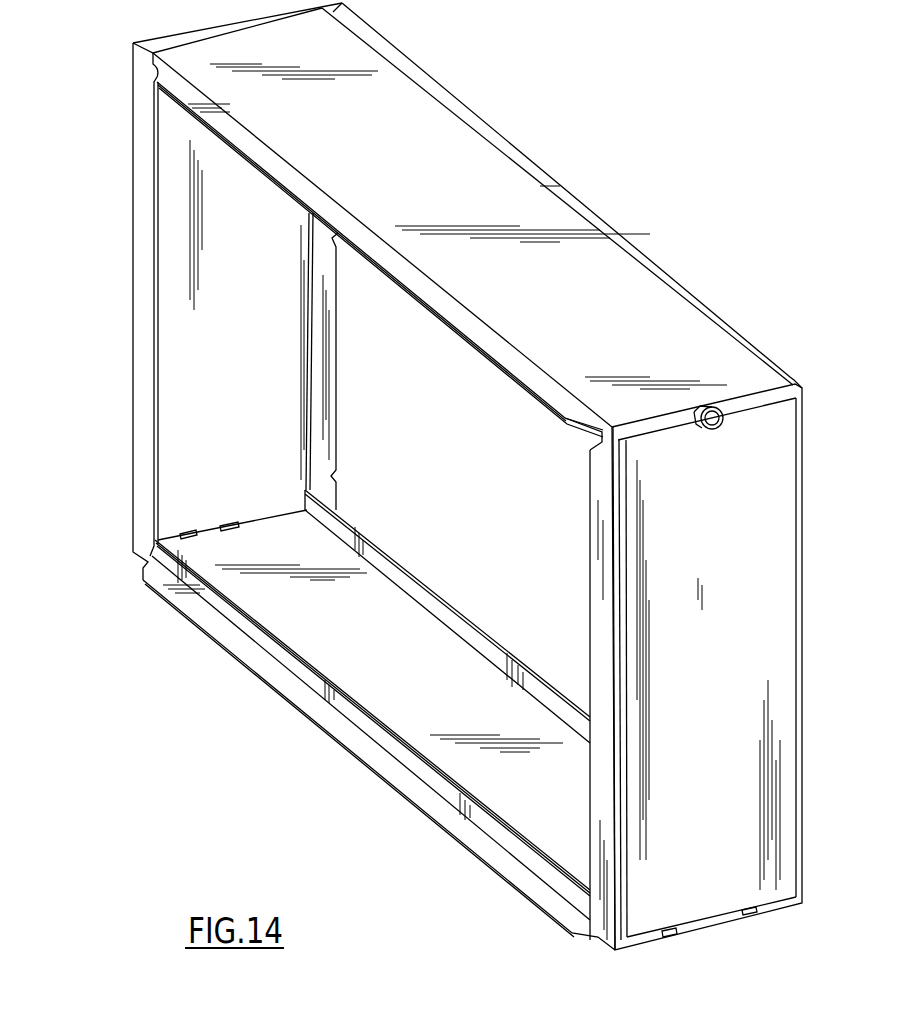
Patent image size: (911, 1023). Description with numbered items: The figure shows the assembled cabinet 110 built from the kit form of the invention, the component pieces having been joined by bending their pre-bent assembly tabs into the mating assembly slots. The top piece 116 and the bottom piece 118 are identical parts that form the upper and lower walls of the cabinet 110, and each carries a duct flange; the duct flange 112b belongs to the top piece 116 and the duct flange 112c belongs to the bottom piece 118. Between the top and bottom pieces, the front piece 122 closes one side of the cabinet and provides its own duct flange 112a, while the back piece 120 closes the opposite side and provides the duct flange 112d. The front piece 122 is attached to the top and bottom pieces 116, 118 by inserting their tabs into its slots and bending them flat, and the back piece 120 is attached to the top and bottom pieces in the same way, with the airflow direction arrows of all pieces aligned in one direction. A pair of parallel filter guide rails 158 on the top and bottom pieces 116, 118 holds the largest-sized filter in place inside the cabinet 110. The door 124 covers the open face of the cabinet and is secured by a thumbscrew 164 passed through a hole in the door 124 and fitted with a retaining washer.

The cabinet 110 is at (429, 476).
The duct flange 112a is at (590, 610).
The duct flange 112b is at (275, 665).
The duct flange 112c is at (455, 312).
The duct flange 112d is at (160, 410).
The top piece 116 is at (472, 172).
The bottom piece 118 is at (410, 678).
The back piece 120 is at (215, 333).
The front piece 122 is at (757, 397).
The door 124 is at (700, 575).
The filter guide rails 158 is at (393, 550).
The thumbscrew 164 is at (720, 432).